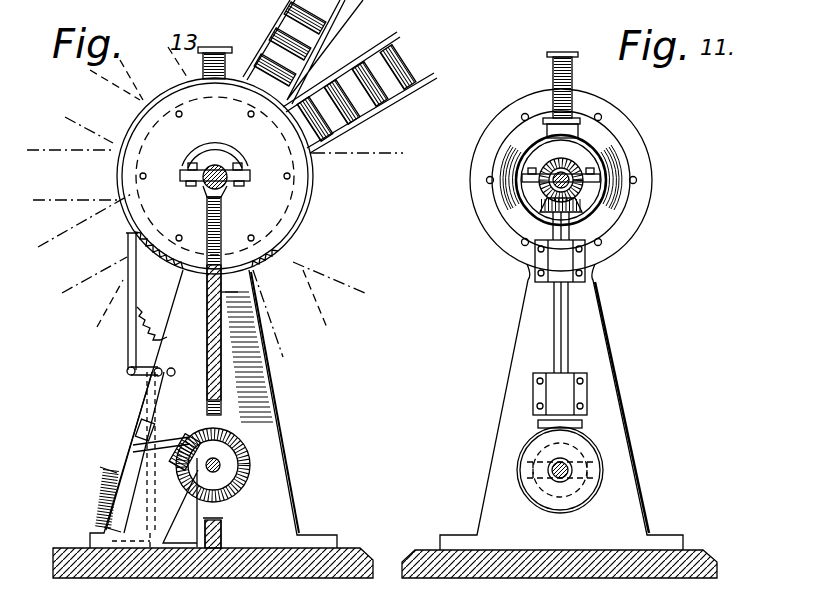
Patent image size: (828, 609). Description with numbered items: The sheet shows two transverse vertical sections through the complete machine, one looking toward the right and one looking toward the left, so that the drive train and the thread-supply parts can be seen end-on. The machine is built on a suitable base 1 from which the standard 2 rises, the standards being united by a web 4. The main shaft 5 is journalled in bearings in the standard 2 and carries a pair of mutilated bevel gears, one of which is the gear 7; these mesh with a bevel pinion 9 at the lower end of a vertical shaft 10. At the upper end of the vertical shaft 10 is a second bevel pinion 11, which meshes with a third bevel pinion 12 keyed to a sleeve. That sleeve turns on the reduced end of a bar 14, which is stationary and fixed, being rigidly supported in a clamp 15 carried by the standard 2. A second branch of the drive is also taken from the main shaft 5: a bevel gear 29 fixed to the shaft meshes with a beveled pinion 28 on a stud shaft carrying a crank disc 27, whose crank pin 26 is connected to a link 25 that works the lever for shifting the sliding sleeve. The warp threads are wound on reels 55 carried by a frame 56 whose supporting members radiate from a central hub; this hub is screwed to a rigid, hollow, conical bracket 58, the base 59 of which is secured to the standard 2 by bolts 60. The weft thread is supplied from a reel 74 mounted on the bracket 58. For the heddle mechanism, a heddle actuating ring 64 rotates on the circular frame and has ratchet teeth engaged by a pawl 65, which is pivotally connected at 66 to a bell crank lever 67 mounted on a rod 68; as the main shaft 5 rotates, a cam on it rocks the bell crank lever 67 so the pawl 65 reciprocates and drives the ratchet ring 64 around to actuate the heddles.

In FIG. 13, the base 1 is at (350, 548).
In FIG. 11, the base 1 is at (706, 550).
In FIG. 13, the standard 2 is at (262, 415).
In FIG. 11, the standard 2 is at (612, 410).
In FIG. 13, the web 4 is at (225, 293).
In FIG. 13, the main shaft 5 is at (220, 466).
In FIG. 11, the main shaft 5 is at (556, 478).
In FIG. 11, the mutilated bevel gear 7 is at (585, 500).
In FIG. 11, the bevel pinion 9 is at (582, 424).
In FIG. 11, the vertical shaft 10 is at (568, 342).
In FIG. 11, the second bevel pinion 11 is at (540, 203).
In FIG. 11, the third bevel pinion 12 is at (575, 168).
In FIG. 13, the bar or shaft 14 is at (194, 306).
In FIG. 13, the clamp 15 is at (222, 165).
In FIG. 13, the link 25 is at (118, 478).
In FIG. 13, the crank pin 26 is at (138, 430).
In FIG. 13, the crank disc 27 is at (133, 448).
In FIG. 13, the beveled pinion 28 is at (177, 428).
In FIG. 13, the bevel gear 29 is at (246, 499).
In FIG. 13, the reel 55 is at (276, 42).
In FIG. 13, the frame 56 is at (400, 102).
In FIG. 11, the bracket 58 is at (520, 172).
In FIG. 11, the base of bracket 59 is at (493, 152).
In FIG. 11, the bolt 60 is at (520, 112).
In FIG. 13, the heddle actuating ring 64 is at (100, 217).
In FIG. 13, the pawl 65 is at (137, 283).
In FIG. 13, the pivot 66 is at (128, 376).
In FIG. 13, the bell crank lever 67 is at (150, 375).
In FIG. 13, the rod 68 is at (175, 369).
In FIG. 13, the reel 74 is at (205, 73).
In FIG. 11, the reel 74 is at (573, 58).